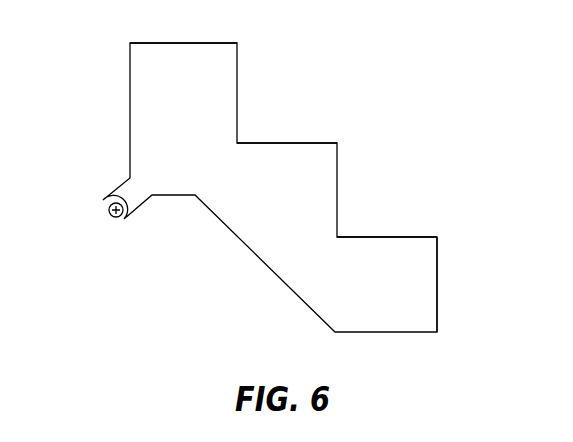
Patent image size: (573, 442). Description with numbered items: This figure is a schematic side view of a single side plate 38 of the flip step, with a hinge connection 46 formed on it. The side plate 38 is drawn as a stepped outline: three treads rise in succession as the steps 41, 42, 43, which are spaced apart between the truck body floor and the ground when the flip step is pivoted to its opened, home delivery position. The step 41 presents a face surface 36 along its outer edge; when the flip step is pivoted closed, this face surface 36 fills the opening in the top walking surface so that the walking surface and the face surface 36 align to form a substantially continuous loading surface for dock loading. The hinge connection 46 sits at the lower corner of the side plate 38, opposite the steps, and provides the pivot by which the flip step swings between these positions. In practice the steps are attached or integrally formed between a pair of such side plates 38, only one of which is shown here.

The face surface 36 is at (437, 283).
The side plate 38 is at (285, 250).
The step 41 is at (387, 237).
The step 42 is at (285, 143).
The step 43 is at (185, 43).
The hinge connection 46 is at (105, 198).